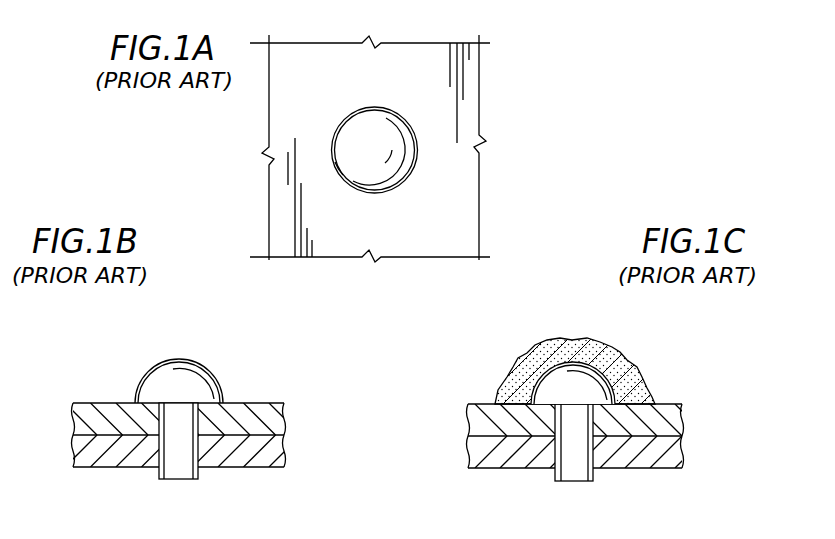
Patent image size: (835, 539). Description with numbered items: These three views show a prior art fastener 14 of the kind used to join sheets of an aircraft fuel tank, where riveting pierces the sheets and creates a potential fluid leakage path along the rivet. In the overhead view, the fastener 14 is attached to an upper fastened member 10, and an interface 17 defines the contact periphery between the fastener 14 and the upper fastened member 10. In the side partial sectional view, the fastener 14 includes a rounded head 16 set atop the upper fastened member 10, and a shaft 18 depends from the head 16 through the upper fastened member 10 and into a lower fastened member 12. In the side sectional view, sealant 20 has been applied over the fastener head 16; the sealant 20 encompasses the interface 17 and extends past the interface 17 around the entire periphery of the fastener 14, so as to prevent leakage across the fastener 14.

In FIG. 1A, the upper fastened member 10 is at (428, 84).
In FIG. 1B, the upper fastened member 10 is at (277, 420).
In FIG. 1C, the upper fastened member 10 is at (672, 419).
In FIG. 1B, the lower fastened member 12 is at (278, 450).
In FIG. 1C, the lower fastened member 12 is at (677, 453).
In FIG. 1A, the fastener 14 is at (378, 153).
In FIG. 1B, the fastener 14 is at (211, 352).
In FIG. 1C, the fastener 14 is at (576, 346).
In FIG. 1A, the rounded head 16 is at (407, 177).
In FIG. 1B, the rounded head 16 is at (167, 362).
In FIG. 1C, the rounded head 16 is at (562, 337).
In FIG. 1A, the interface 17 is at (366, 197).
In FIG. 1B, the interface 17 is at (236, 396).
In FIG. 1B, the shaft 18 is at (193, 472).
In FIG. 1C, the shaft 18 is at (586, 473).
In FIG. 1C, the sealant 20 is at (517, 358).